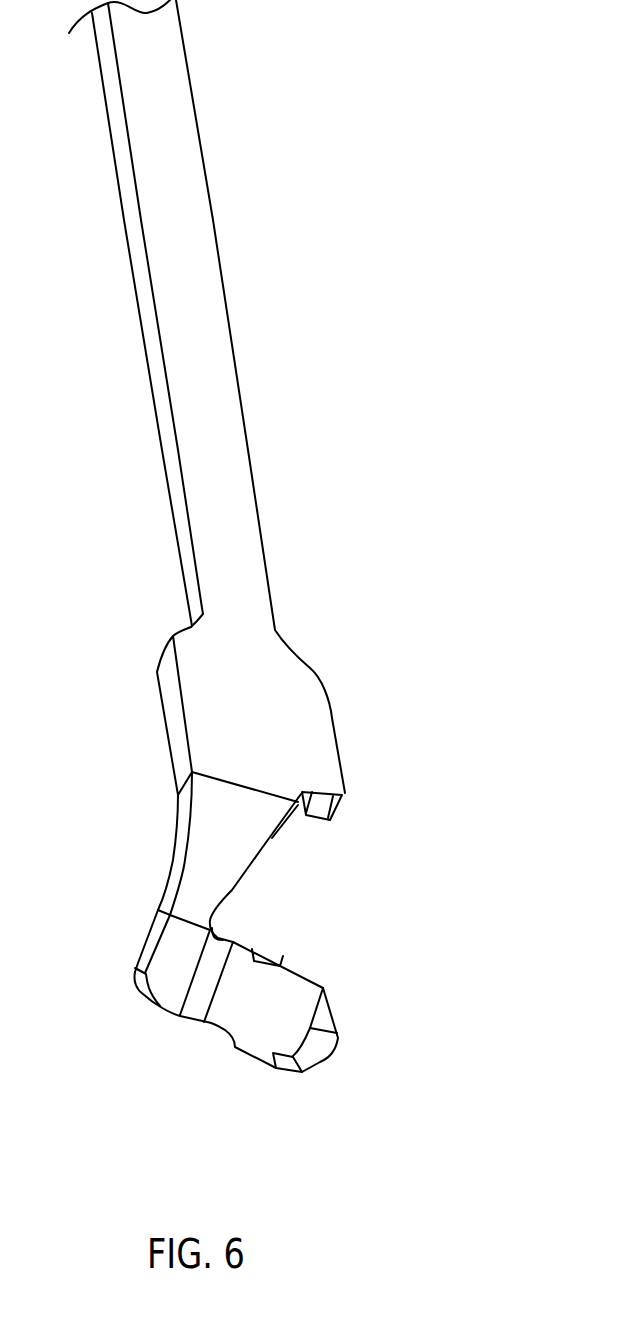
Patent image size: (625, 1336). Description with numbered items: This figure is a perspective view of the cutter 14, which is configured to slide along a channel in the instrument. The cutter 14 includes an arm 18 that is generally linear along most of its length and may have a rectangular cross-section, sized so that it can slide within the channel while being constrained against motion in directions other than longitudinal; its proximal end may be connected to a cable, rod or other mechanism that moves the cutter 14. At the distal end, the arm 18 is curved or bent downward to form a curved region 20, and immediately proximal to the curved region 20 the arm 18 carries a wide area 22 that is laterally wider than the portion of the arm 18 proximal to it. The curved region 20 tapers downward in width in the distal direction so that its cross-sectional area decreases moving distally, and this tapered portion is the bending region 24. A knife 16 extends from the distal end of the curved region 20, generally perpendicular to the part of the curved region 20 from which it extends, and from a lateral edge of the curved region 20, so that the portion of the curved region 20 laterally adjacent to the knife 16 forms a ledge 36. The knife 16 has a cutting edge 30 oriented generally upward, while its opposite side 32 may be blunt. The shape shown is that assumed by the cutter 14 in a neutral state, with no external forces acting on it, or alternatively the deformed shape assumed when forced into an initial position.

The cutter 14 is at (277, 572).
The knife 16 is at (293, 1030).
The arm 18 is at (224, 299).
The curved region 20 is at (177, 832).
The wide area 22 is at (333, 718).
The bending region 24 is at (232, 890).
The cutting edge 30 is at (318, 984).
The opposite side 32 is at (258, 1058).
The ledge 36 is at (135, 980).